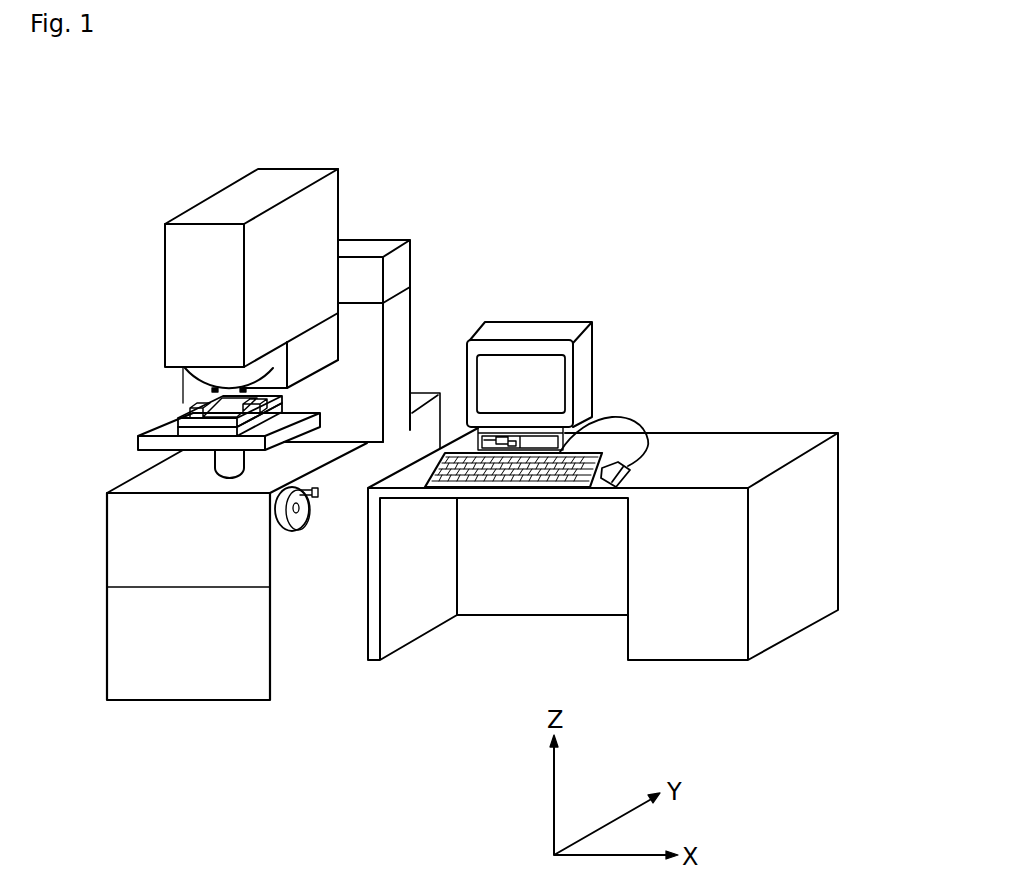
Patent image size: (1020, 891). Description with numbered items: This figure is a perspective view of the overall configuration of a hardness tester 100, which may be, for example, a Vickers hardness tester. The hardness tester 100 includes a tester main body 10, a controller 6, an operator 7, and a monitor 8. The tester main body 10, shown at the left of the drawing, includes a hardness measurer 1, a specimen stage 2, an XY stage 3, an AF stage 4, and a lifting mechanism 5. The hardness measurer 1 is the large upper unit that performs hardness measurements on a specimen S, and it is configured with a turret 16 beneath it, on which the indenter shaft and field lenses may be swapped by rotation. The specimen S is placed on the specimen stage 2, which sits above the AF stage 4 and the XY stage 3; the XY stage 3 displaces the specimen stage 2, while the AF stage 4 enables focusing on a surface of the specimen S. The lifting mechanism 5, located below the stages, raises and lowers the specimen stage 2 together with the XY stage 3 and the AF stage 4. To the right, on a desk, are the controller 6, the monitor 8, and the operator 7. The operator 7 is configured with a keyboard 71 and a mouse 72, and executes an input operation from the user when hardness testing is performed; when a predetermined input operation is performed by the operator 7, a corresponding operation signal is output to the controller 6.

The hardness tester 100 is at (600, 182).
The tester main body 10 is at (440, 228).
The hardness measurer 1 is at (230, 204).
The turret 16 is at (218, 373).
The specimen S is at (208, 407).
The specimen stage 2 is at (185, 423).
The AF stage 4 is at (178, 432).
The XY stage 3 is at (138, 442).
The lifting mechanism 5 is at (228, 468).
The monitor 8 is at (538, 330).
The controller 6 is at (562, 450).
The operator 7 is at (603, 553).
The keyboard 71 is at (498, 483).
The mouse 72 is at (602, 485).